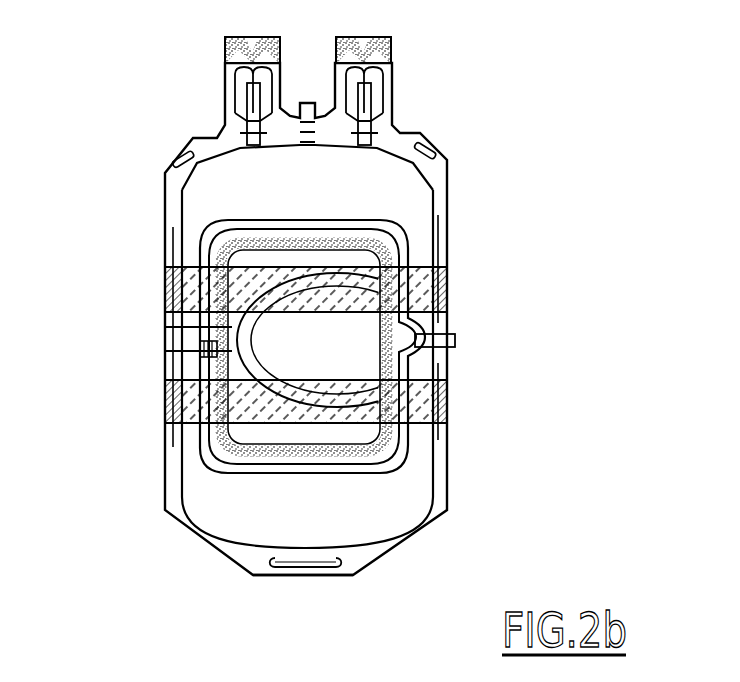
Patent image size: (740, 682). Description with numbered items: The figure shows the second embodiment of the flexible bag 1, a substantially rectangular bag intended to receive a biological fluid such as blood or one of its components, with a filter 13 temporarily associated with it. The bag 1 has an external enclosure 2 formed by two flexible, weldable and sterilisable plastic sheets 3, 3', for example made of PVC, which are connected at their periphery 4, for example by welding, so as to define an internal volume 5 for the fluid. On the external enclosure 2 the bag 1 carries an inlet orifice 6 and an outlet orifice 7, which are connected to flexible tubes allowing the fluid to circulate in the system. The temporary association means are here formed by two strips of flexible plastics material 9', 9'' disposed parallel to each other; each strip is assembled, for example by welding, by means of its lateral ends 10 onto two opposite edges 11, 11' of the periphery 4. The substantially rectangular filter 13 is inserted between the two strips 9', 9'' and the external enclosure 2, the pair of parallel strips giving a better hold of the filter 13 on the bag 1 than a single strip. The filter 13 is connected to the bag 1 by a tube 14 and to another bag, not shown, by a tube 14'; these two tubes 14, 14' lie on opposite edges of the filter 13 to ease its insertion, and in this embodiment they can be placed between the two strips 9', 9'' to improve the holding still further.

The flexible bag 1 is at (533, 284).
The external enclosure 2 is at (363, 505).
The plastic sheet 3 is at (250, 328).
The plastic sheet 3' is at (250, 328).
The periphery 4 is at (218, 552).
The internal volume 5 is at (392, 193).
The inlet orifice 6 is at (226, 40).
The outlet orifice 7 is at (392, 33).
The strip of flexible plastics material 9' is at (505, 296).
The strip of flexible plastics material 9'' is at (485, 434).
The lateral ends 10 is at (162, 283).
The edge of the periphery 11 is at (123, 385).
The edge of the periphery 11' is at (492, 383).
The filter 13 is at (162, 327).
The tube 14 is at (509, 359).
The tube 14' is at (132, 382).